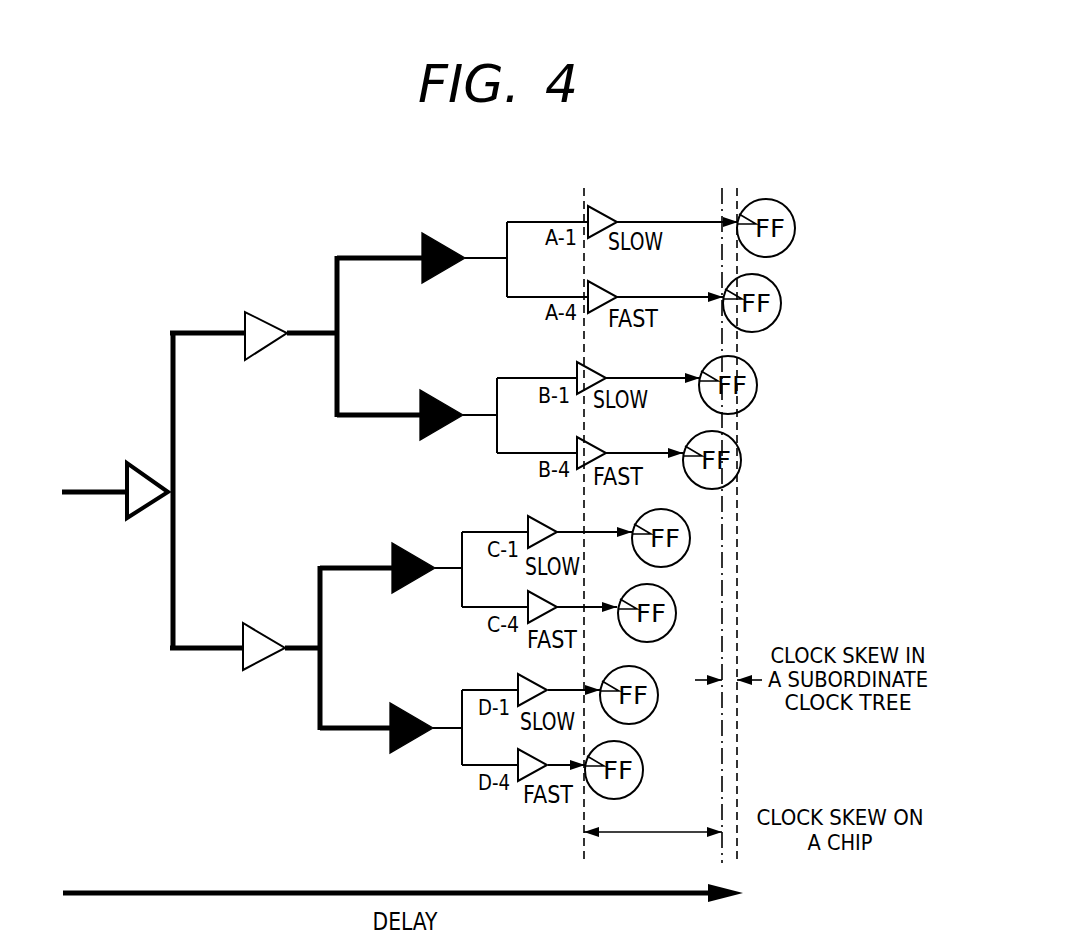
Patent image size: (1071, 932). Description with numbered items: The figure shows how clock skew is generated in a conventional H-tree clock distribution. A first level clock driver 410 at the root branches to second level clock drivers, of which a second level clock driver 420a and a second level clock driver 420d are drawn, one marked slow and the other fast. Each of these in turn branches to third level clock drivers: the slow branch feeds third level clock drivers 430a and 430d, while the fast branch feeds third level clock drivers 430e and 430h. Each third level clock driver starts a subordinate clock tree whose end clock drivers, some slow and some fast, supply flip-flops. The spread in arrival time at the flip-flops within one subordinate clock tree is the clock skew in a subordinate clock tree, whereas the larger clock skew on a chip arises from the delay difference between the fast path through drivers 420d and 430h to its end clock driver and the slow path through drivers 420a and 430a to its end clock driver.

The first level clock driver 410 is at (127, 478).
The second level clock driver 420a is at (245, 325).
The second level clock driver 420d is at (243, 660).
The third level clock driver 430a is at (422, 246).
The third level clock driver 430d is at (420, 428).
The third level clock driver 430e is at (392, 556).
The third level clock driver 430h is at (390, 740).